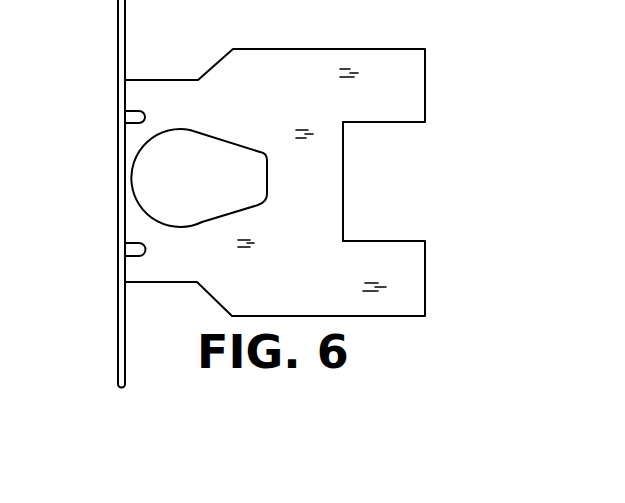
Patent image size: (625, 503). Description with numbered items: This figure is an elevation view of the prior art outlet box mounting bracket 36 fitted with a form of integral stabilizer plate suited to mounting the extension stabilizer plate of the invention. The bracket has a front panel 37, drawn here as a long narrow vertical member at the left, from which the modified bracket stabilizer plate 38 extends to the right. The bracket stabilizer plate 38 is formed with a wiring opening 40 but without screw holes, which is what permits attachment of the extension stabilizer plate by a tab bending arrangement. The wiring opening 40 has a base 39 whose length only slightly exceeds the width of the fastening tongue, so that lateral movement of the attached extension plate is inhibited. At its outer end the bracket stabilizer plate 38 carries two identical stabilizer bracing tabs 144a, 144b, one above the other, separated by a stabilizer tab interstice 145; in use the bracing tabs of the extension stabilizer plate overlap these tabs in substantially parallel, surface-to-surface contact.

The outlet box mounting bracket 36 is at (113, 137).
The front panel 37 is at (116, 322).
The bracket stabilizer plate 38 is at (360, 47).
The base of wiring hole 39 is at (268, 178).
The wiring opening 40 is at (197, 156).
The stabilizer bracing tab 144a is at (407, 78).
The stabilizer bracing tab 144b is at (415, 273).
The stabilizer tab interstice 145 is at (383, 192).